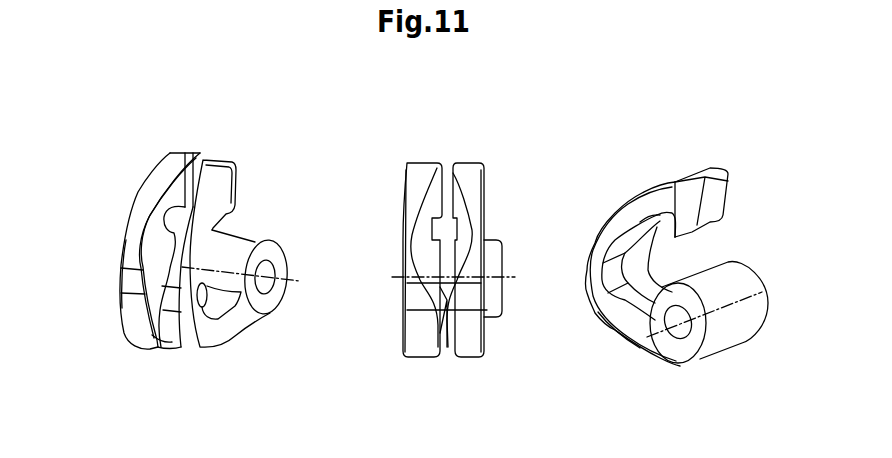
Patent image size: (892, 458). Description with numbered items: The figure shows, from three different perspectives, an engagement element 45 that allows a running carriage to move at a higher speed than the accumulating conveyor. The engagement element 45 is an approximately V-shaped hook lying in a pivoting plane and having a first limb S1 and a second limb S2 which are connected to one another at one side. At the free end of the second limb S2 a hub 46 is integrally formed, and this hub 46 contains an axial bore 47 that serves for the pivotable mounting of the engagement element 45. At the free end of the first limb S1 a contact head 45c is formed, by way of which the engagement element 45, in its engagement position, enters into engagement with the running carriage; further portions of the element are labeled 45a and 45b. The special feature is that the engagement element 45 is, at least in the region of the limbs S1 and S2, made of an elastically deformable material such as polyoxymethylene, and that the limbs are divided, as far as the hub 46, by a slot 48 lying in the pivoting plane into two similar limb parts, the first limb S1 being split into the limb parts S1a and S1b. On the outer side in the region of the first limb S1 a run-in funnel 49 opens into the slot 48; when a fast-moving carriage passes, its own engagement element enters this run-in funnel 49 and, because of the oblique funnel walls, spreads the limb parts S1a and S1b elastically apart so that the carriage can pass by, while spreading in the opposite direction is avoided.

The engagement element 45 is at (434, 253).
The engagement element part 45a is at (601, 166).
The engagement element part 45b is at (744, 250).
The contact head 45c is at (756, 197).
The hub 46 is at (506, 302).
The axial bore 47 is at (270, 272).
The slot 48 is at (260, 355).
The run-in funnel 49 is at (260, 246).
The first limb S1 is at (587, 221).
The first limb part S1a is at (128, 259).
The first limb part S1b is at (175, 274).
The second limb S2 is at (615, 335).